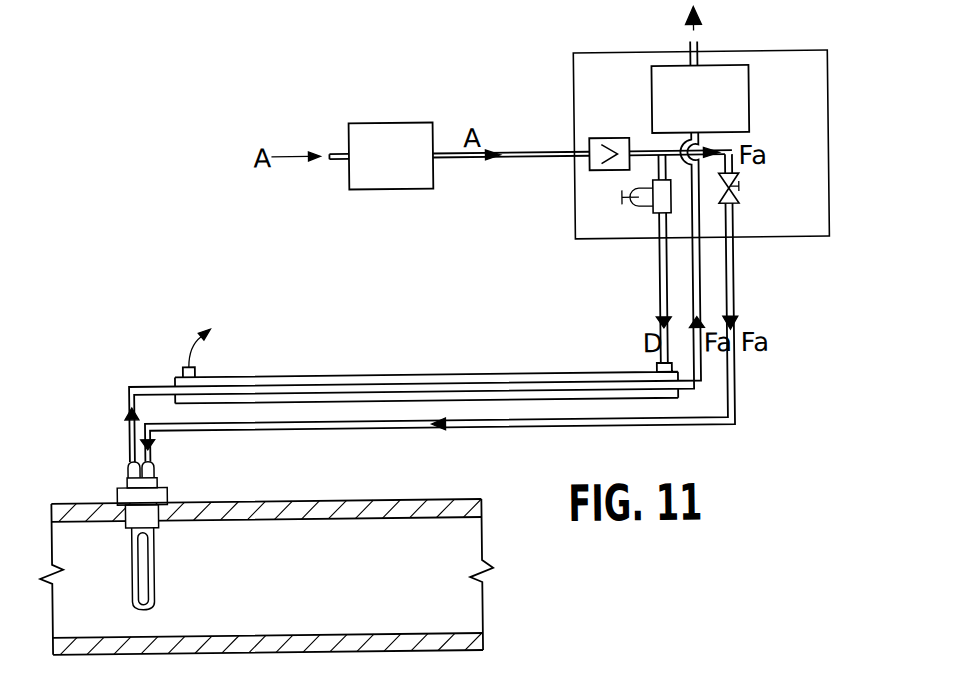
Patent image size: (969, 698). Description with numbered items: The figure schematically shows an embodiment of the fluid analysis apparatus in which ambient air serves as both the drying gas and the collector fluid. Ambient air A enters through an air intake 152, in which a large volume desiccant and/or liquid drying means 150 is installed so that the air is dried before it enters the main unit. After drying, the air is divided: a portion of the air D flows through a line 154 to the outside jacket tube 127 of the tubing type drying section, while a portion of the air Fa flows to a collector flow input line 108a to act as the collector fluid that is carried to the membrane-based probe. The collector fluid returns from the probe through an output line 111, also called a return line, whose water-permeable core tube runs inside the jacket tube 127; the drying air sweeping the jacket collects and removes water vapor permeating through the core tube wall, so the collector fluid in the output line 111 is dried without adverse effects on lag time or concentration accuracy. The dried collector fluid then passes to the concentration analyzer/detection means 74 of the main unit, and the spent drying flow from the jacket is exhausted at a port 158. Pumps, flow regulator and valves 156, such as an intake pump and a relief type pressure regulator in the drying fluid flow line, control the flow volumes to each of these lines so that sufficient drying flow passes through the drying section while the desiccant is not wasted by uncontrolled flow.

The air intake 152 is at (343, 150).
The drying means 150 is at (403, 122).
The pumps, flow regulator and valves 156 is at (620, 140).
The concentration analyzer/detection means 74 is at (745, 102).
The line 154 is at (662, 175).
The collector flow input line 108a is at (737, 256).
The outside jacket tube 127 is at (420, 373).
The port 158 is at (187, 363).
The output line 111 is at (129, 429).